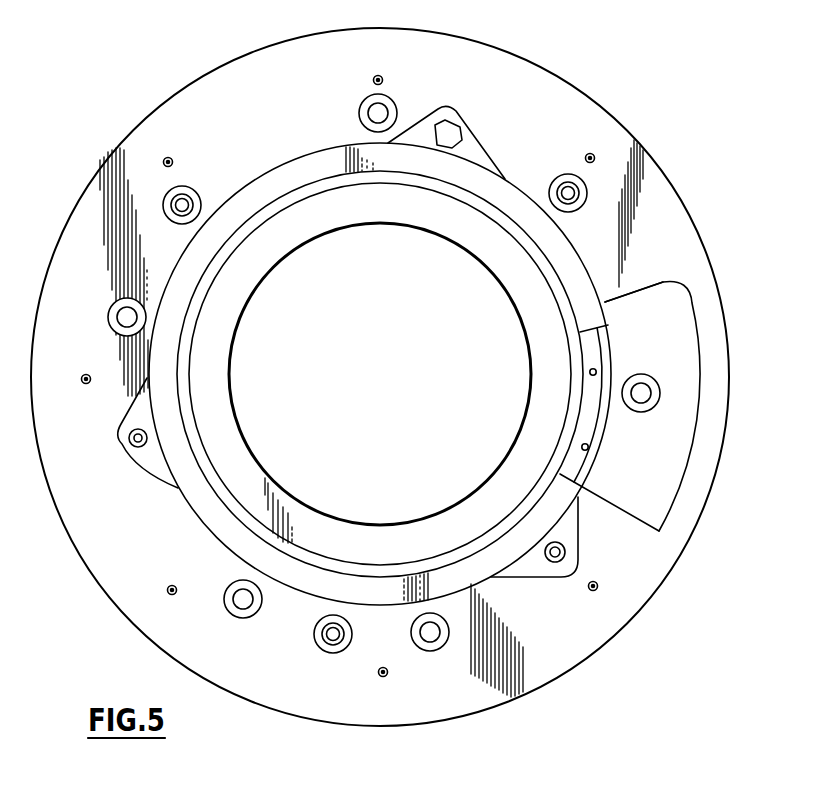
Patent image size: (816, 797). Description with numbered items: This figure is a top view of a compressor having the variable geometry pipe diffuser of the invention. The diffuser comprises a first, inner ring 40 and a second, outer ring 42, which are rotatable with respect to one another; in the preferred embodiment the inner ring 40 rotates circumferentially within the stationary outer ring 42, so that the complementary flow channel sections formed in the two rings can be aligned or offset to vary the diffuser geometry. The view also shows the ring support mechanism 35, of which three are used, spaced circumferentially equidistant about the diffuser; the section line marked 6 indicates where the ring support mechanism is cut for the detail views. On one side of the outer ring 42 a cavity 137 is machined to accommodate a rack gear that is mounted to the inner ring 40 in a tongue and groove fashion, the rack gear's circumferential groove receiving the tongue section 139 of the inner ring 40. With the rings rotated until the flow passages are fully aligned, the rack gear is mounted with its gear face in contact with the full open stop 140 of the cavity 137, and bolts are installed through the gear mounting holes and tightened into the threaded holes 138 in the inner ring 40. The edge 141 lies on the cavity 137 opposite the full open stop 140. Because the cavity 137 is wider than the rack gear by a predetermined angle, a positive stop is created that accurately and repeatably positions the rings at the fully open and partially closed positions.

The outer ring 42 is at (222, 83).
The inner ring 40 is at (258, 263).
The ring support mechanism 35 is at (470, 138).
The cavity 137 is at (683, 444).
The threaded holes 138 is at (586, 450).
The tongue section 139 is at (597, 386).
The full open stop 140 is at (659, 531).
The pad edge 141 is at (667, 281).
The section line 6- 6 is at (453, 88).